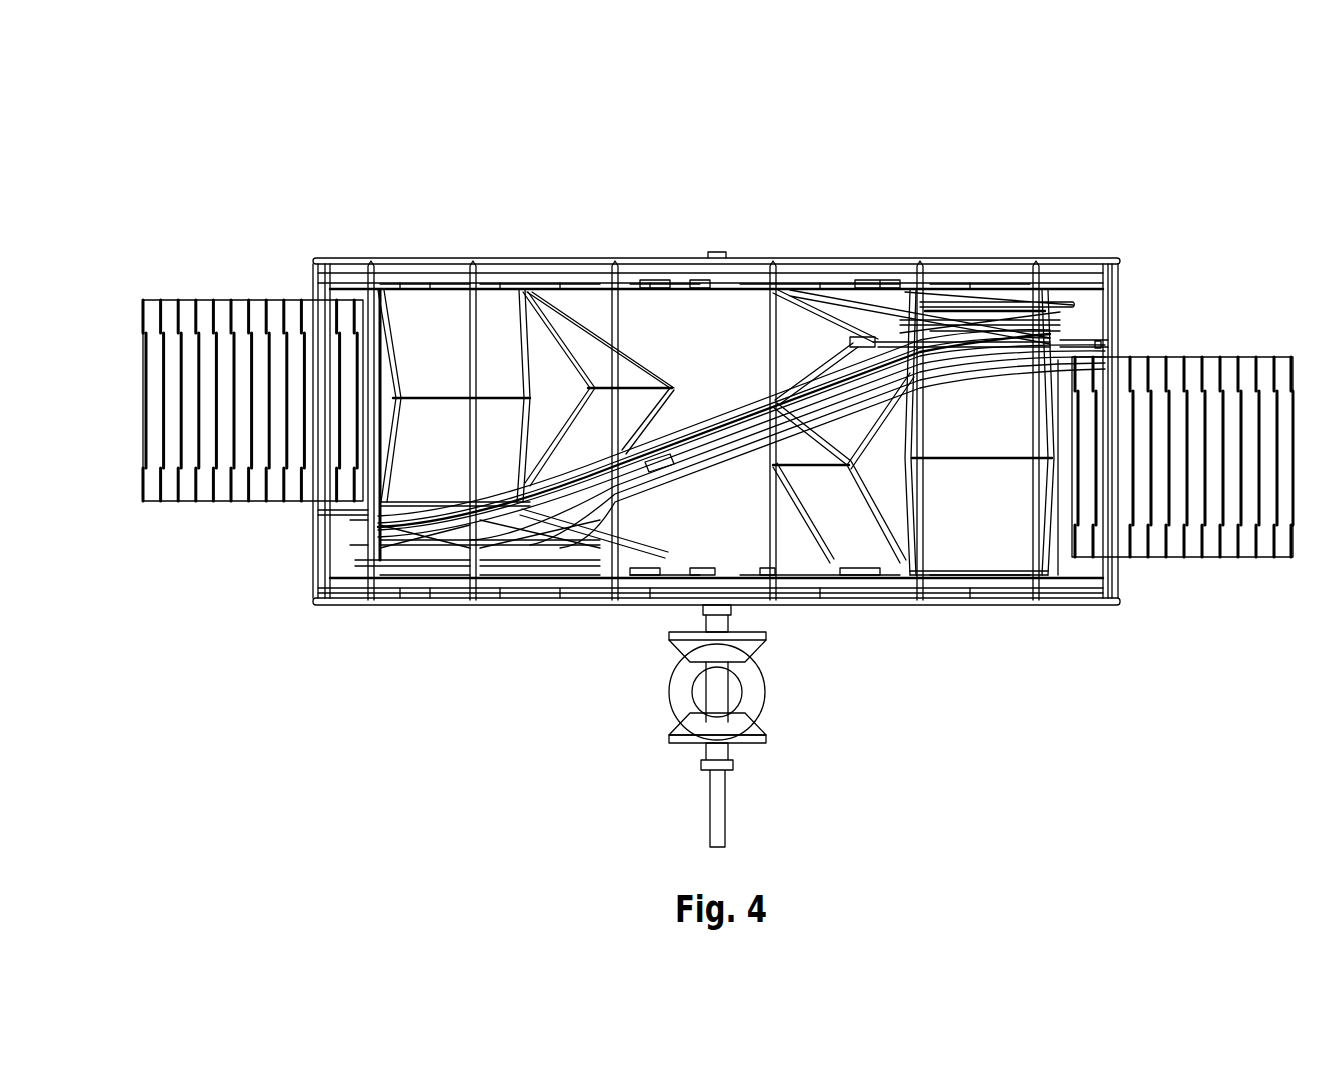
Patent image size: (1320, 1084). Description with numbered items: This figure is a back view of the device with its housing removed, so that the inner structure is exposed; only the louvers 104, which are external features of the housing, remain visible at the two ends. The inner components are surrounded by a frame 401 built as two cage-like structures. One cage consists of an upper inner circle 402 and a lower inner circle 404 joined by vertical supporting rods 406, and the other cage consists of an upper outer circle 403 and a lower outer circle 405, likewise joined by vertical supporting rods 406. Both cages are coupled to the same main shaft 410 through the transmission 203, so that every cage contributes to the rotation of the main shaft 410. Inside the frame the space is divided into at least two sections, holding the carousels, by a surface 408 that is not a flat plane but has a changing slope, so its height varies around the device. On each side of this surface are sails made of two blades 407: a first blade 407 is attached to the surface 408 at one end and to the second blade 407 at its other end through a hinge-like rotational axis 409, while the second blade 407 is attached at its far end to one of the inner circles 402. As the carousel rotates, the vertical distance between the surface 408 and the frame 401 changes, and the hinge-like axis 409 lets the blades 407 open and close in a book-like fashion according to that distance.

The louvers 104 is at (190, 470).
The transmission 203 is at (638, 697).
The frame 401 is at (1166, 237).
The upper inner circle 402 is at (568, 289).
The upper outer circle 403 is at (433, 262).
The lower inner circle 404 is at (430, 580).
The lower outer circle 405 is at (340, 605).
The vertical supporting rods 406 is at (1034, 602).
The blades 407 is at (843, 525).
The surface 408 is at (955, 355).
The hinge-like rotational axis 409 is at (430, 393).
The main shaft 410 is at (666, 810).